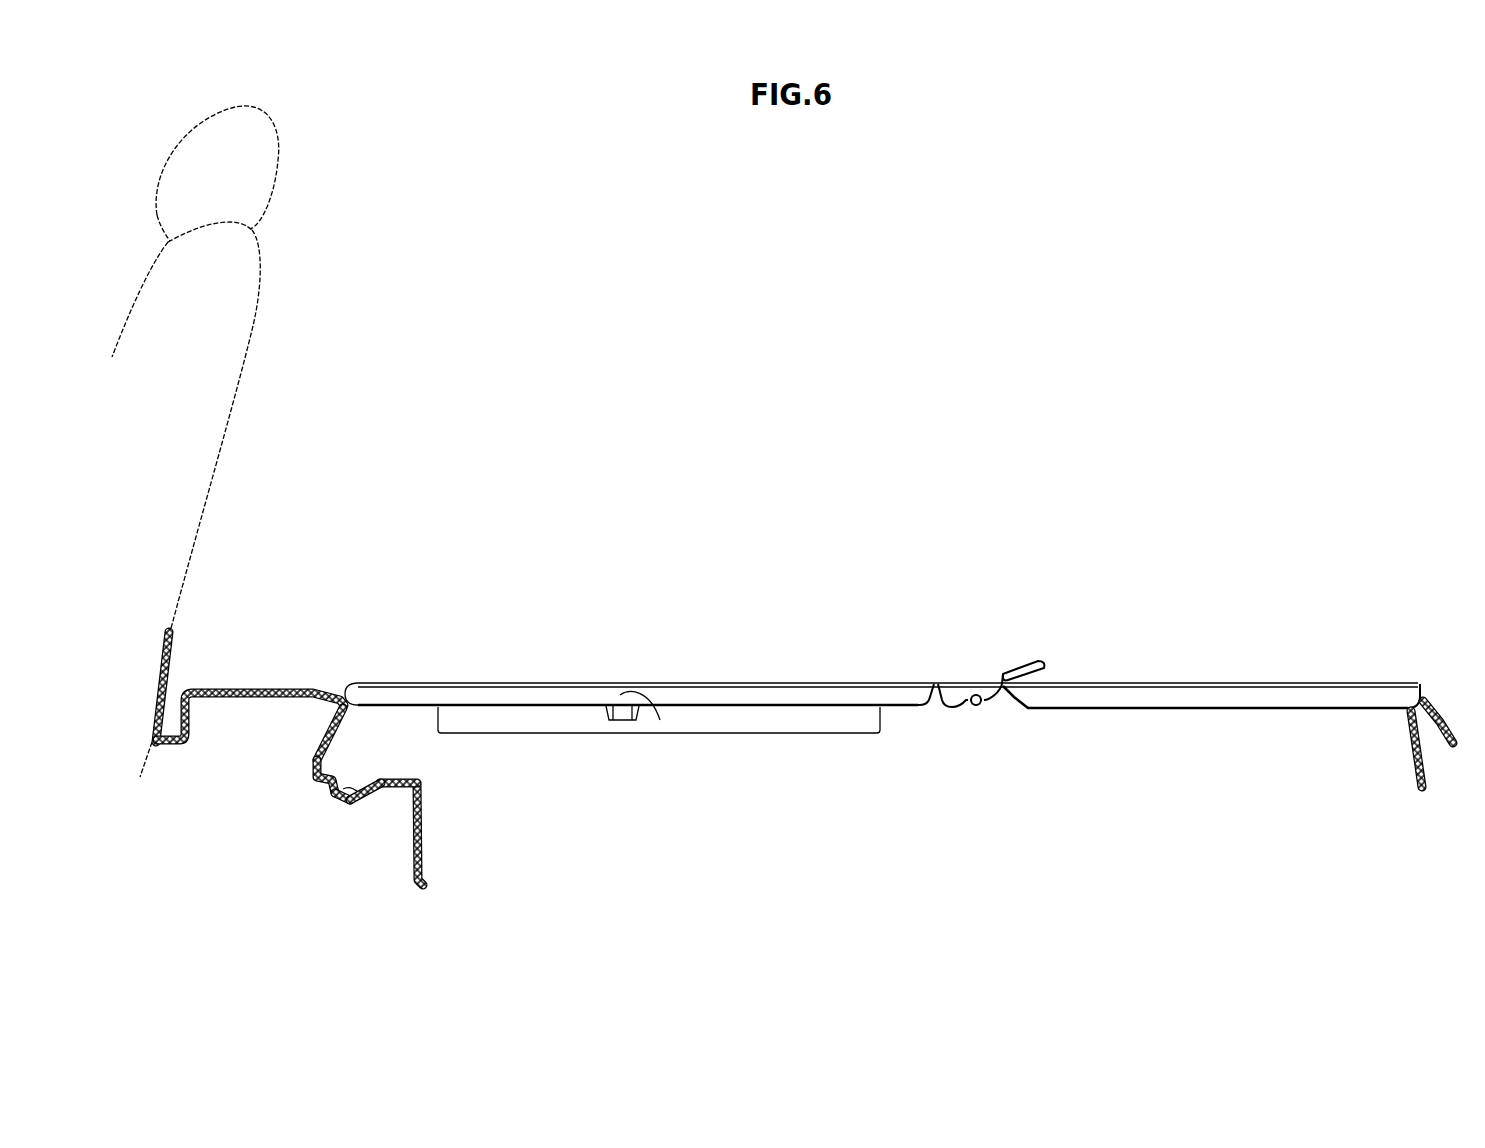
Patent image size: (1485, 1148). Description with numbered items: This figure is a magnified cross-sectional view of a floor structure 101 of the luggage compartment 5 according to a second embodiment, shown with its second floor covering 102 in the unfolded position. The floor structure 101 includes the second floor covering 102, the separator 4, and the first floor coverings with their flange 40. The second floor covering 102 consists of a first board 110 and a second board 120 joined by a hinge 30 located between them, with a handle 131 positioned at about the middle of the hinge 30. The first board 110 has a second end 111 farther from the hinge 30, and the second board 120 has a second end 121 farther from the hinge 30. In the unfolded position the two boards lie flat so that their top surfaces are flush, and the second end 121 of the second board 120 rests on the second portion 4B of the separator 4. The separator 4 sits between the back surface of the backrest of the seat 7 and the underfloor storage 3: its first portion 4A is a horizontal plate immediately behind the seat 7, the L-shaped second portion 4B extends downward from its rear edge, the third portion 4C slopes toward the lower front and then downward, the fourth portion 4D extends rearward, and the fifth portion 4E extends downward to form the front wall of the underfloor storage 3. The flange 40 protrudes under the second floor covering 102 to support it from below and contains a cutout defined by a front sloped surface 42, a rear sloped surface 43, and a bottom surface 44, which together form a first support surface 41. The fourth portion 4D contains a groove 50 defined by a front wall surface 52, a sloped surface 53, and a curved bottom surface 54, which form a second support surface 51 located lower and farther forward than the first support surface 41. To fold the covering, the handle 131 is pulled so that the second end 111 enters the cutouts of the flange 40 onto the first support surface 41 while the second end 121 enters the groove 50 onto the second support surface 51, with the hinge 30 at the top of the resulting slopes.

The underfloor storage 3 is at (1384, 826).
The separator 4 is at (194, 753).
The first portion 4A is at (253, 697).
The second portion 4B is at (340, 706).
The third portion 4C is at (317, 762).
The fourth portion 4D is at (325, 792).
The fifth portion 4E is at (418, 852).
The luggage compartment 5 is at (1371, 509).
The seat 7 is at (217, 427).
The hinge 30 is at (934, 684).
The flange 40 is at (801, 723).
The first support surface 41 is at (695, 817).
The front sloped surface 42 is at (615, 720).
The rear sloped surface 43 is at (628, 720).
The bottom surface 44 is at (660, 720).
The groove 50 is at (422, 762).
The second support surface 51 is at (478, 765).
The front wall surface 52 is at (340, 793).
The sloped surface 53 is at (358, 793).
The bottom surface 54 is at (366, 798).
The floor structure 101 is at (1191, 181).
The second floor covering 102 is at (1330, 565).
The first board 110 is at (1280, 695).
The second end 111 is at (1410, 698).
The second board 120 is at (552, 690).
The second end 121 is at (357, 696).
The handle 131 is at (1040, 663).